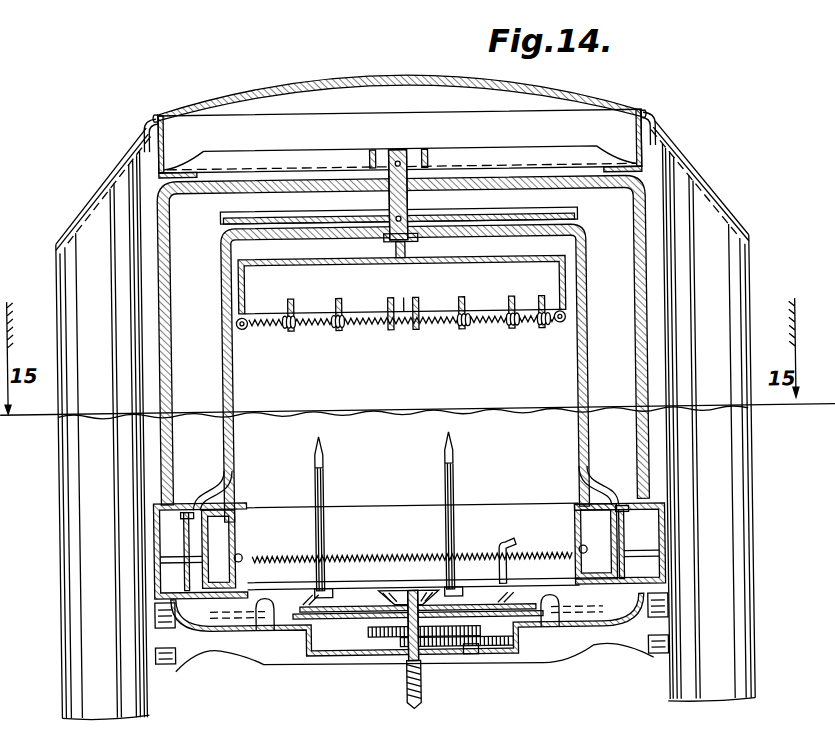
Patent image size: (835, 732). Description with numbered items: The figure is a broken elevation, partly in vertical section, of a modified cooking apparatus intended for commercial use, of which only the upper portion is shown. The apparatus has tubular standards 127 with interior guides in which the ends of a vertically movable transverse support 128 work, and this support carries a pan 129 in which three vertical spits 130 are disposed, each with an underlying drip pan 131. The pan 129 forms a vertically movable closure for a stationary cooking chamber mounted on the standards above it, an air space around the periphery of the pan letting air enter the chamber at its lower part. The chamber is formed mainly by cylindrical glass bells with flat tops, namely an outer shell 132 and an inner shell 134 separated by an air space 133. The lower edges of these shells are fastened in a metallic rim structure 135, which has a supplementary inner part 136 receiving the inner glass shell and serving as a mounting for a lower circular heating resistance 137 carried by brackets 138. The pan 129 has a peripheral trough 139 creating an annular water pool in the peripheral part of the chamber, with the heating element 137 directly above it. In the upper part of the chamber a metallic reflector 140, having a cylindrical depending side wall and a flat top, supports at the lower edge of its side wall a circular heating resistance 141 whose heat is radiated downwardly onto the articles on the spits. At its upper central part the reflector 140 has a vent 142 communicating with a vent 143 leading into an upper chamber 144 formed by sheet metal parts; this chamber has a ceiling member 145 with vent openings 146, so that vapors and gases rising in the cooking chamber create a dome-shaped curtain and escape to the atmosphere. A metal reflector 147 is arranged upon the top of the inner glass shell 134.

The tubular standards 127 is at (83, 532).
The transverse support 128 is at (598, 638).
The pan 129 is at (541, 622).
The vertical spits 130 is at (323, 464).
The drip pan 131 is at (372, 603).
The outer shell 132 is at (640, 308).
The air space 133 is at (622, 352).
The inner shell 134 is at (581, 388).
The rim structure 135 is at (658, 549).
The supplementary inner part 136 is at (573, 528).
The lower circular heating resistance 137 is at (398, 557).
The brackets 138 is at (500, 568).
The peripheral trough 139 is at (230, 621).
The metallic reflector 140 is at (566, 284).
The circular heating resistance 141 is at (486, 328).
The vent 142 is at (403, 256).
The vent 143 is at (406, 190).
The upper chamber 144 is at (617, 124).
The ceiling member 145 is at (195, 110).
The vent openings 146 is at (272, 93).
The metal reflector 147 is at (580, 218).